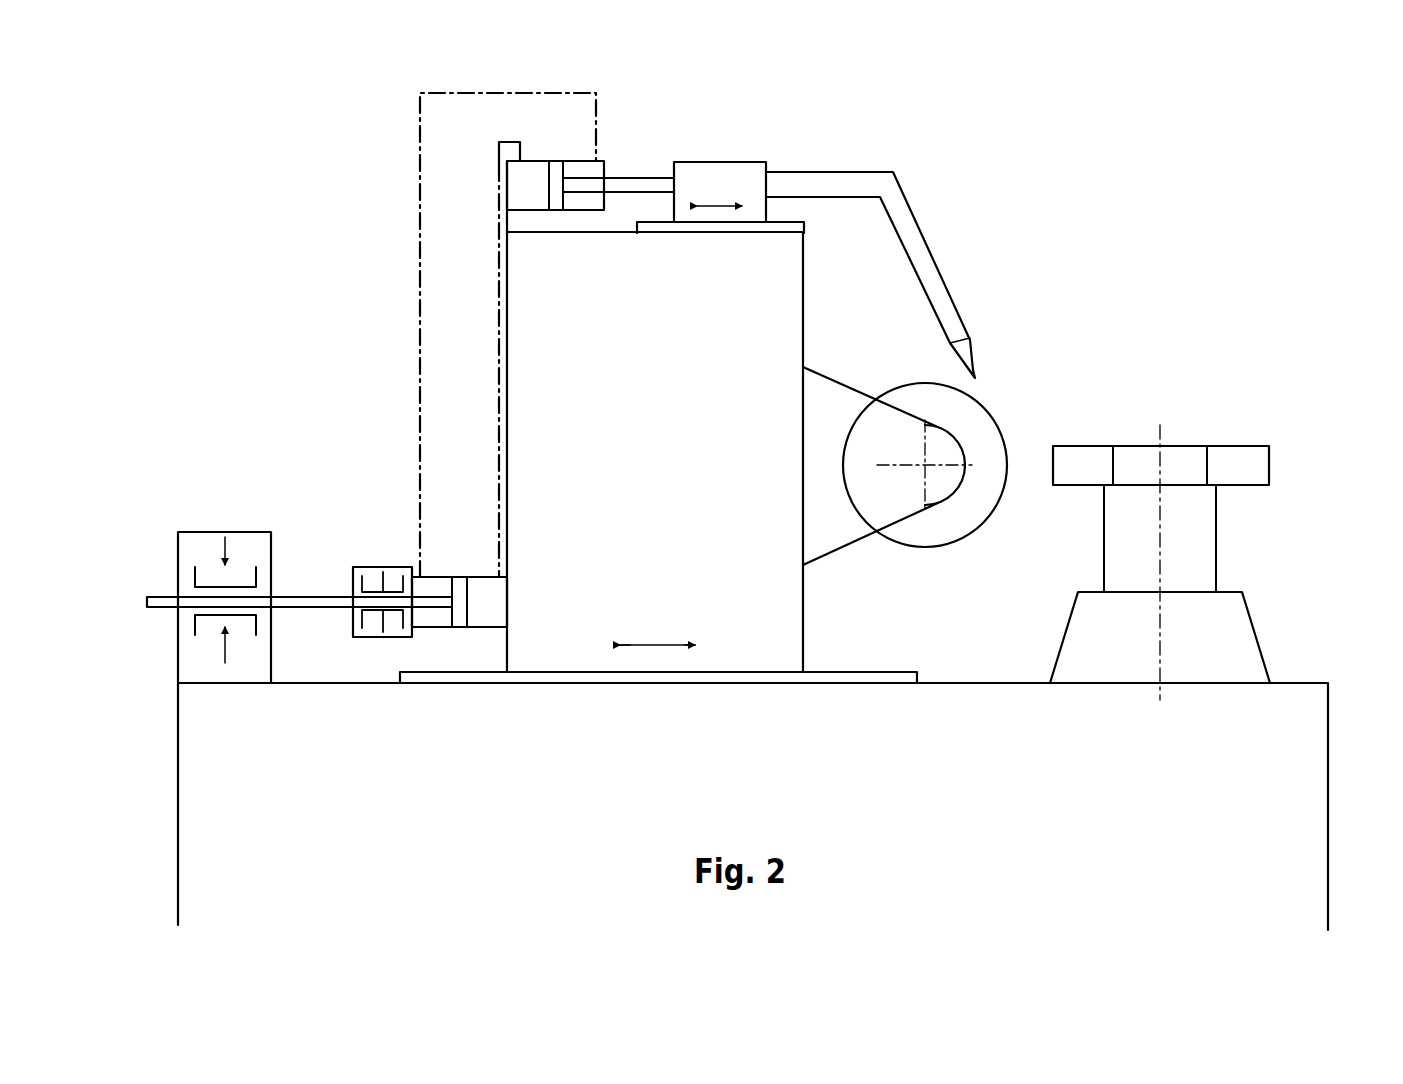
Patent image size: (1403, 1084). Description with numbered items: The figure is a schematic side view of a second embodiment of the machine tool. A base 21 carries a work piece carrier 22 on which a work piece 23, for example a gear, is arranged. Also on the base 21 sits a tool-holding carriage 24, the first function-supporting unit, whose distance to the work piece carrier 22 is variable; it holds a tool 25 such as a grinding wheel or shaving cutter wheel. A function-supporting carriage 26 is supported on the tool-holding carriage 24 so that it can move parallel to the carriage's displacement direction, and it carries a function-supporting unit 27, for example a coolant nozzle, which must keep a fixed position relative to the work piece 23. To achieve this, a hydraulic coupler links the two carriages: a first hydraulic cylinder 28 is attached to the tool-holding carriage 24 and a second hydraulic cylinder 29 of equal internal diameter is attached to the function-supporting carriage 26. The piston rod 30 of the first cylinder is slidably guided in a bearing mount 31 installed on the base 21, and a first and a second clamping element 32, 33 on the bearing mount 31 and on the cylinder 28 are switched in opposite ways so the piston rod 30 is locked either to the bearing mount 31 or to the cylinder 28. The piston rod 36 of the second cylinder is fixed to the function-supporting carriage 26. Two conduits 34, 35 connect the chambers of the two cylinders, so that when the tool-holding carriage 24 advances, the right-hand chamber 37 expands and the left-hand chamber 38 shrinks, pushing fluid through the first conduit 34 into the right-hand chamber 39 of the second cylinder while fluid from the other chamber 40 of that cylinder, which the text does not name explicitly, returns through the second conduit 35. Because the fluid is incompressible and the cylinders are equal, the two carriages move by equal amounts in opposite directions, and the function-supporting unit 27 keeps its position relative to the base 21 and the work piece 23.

The base 21 is at (1250, 744).
The work piece carrier 22 is at (1208, 647).
The work piece 23 is at (1225, 463).
The tool-holding carriage 24 is at (760, 370).
The tool 25 is at (962, 423).
The function-supporting carriage 26 is at (727, 185).
The function-supporting unit 27 is at (902, 218).
The first hydraulic cylinder 28 is at (485, 572).
The second hydraulic cylinder 29 is at (603, 163).
The piston rod 30 is at (315, 600).
The bearing mount 31 is at (202, 672).
The first clamping element 32 is at (223, 533).
The second clamping element 33 is at (380, 565).
The first conduit 34 is at (420, 167).
The second conduit 35 is at (497, 203).
The piston rod 36 is at (665, 187).
The right-hand chamber 37 is at (490, 610).
The left-hand chamber 38 is at (433, 618).
The right-hand chamber 39 is at (588, 202).
The cylinder chamber 40 is at (528, 188).